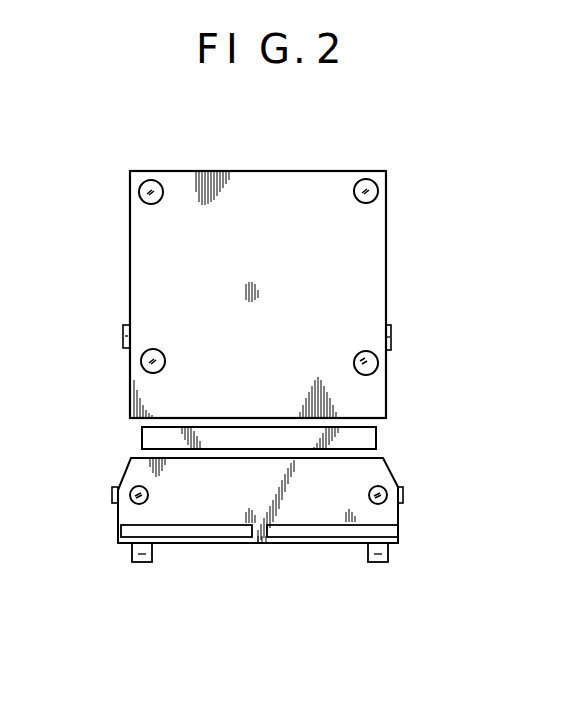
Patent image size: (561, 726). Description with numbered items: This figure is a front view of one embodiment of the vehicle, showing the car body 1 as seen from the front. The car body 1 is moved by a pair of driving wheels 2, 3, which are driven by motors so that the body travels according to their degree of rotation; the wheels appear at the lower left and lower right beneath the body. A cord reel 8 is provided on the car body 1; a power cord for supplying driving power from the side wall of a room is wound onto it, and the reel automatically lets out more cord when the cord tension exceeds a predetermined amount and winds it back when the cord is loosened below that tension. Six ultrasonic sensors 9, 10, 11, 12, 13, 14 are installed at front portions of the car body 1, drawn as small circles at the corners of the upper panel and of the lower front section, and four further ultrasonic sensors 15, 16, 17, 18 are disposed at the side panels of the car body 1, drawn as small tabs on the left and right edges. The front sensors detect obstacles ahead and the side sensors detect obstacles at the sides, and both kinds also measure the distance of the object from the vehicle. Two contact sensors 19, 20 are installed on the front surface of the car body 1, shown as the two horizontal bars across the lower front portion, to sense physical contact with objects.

The car body 1 is at (118, 256).
The driving wheel 2 is at (143, 564).
The driving wheel 3 is at (378, 564).
The cord reel 8 is at (142, 443).
The ultrasonic sensor 9 is at (139, 192).
The ultrasonic sensor 10 is at (141, 364).
The ultrasonic sensor 11 is at (133, 502).
The ultrasonic sensor 12 is at (378, 191).
The ultrasonic sensor 13 is at (378, 365).
The ultrasonic sensor 14 is at (383, 490).
The ultrasonic sensor 15 is at (123, 336).
The ultrasonic sensor 16 is at (112, 495).
The ultrasonic sensor 17 is at (391, 336).
The ultrasonic sensor 18 is at (403, 493).
The contact sensor 19 is at (209, 545).
The contact sensor 20 is at (313, 545).